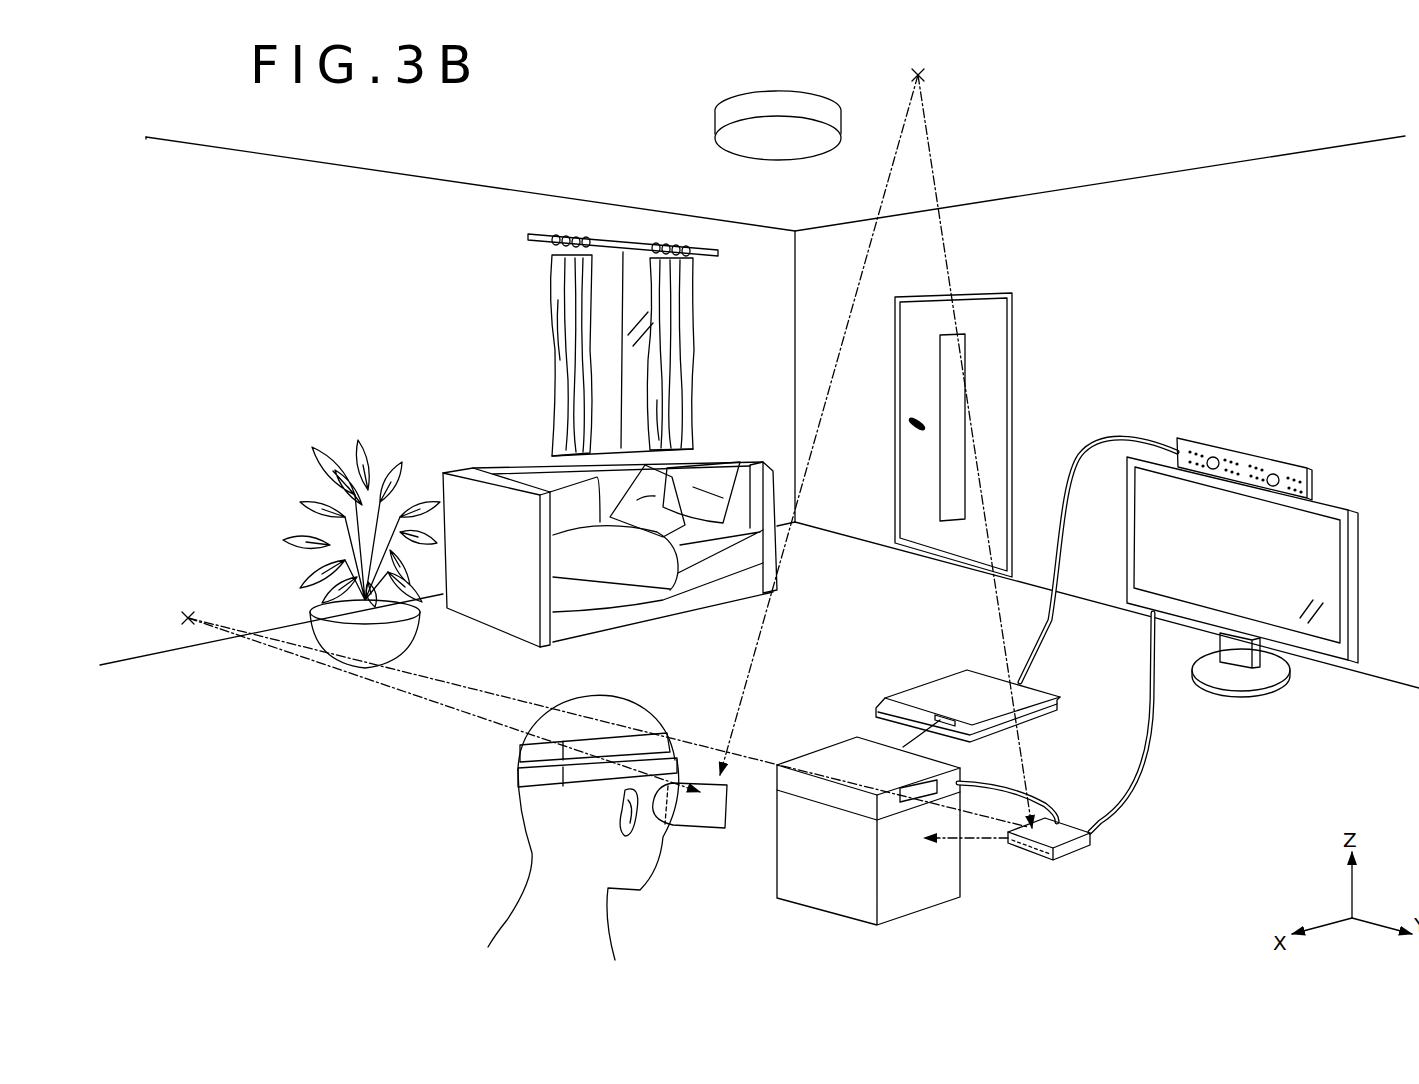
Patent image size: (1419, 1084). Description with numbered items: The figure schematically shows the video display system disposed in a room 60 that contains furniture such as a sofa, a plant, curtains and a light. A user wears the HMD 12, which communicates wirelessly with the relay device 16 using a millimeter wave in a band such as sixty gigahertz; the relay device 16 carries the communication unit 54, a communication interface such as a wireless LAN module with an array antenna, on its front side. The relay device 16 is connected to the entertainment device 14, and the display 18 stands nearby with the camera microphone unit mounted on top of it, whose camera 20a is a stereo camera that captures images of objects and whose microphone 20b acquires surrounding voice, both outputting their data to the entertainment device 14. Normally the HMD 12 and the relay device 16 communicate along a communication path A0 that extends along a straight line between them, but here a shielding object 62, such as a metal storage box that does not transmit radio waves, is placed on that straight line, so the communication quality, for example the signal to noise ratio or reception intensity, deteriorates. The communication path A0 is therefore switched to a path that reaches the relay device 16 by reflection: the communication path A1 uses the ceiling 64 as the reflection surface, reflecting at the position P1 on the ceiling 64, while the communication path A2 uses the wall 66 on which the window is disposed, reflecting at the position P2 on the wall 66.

The HMD 12 is at (700, 831).
The entertainment device 14 is at (905, 690).
The relay device 16 is at (1092, 836).
The display 18 is at (1358, 581).
The camera 20a is at (1212, 470).
The microphone 20b is at (1235, 460).
The communication unit 54 is at (1050, 858).
The room 60 is at (326, 832).
The shielding object 62 is at (822, 912).
The ceiling 64 is at (404, 152).
The wall 66 is at (198, 314).
The position P1 is at (925, 78).
The position P2 is at (187, 612).
The communication path A0 is at (978, 843).
The communication path A1 is at (936, 180).
The communication path A2 is at (410, 694).